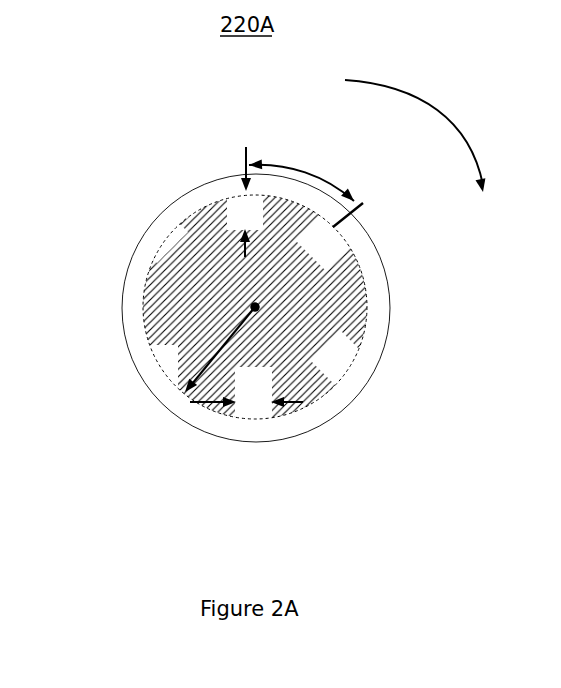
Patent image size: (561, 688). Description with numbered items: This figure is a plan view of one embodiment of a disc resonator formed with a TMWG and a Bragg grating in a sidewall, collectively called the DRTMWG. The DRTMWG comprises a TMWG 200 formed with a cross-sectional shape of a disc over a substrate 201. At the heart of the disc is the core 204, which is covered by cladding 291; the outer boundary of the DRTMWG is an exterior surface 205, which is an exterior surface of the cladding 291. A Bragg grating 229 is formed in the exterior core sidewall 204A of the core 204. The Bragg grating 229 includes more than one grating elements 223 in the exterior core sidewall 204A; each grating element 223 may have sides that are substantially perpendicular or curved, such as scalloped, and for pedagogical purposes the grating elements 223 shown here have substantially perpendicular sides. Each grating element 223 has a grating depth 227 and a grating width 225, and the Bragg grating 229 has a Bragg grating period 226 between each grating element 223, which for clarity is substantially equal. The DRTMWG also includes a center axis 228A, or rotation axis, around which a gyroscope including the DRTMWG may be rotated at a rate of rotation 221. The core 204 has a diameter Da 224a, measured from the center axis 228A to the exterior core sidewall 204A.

The TMWG 200 is at (142, 308).
The substrate 201 is at (376, 224).
The core 204 is at (199, 212).
The exterior core sidewall 204A is at (333, 385).
The exterior surface 205 is at (323, 424).
The rate of rotation 221 is at (438, 126).
The grating element 223 is at (166, 226).
The diameter Da 224a is at (203, 358).
The grating width (GW) 225 is at (205, 402).
The Bragg grating period (GP) 226 is at (310, 175).
The grating depth (GD) 227 is at (246, 155).
The center axis 228A is at (272, 308).
The Bragg grating 229 is at (360, 358).
The cladding 291 is at (140, 368).